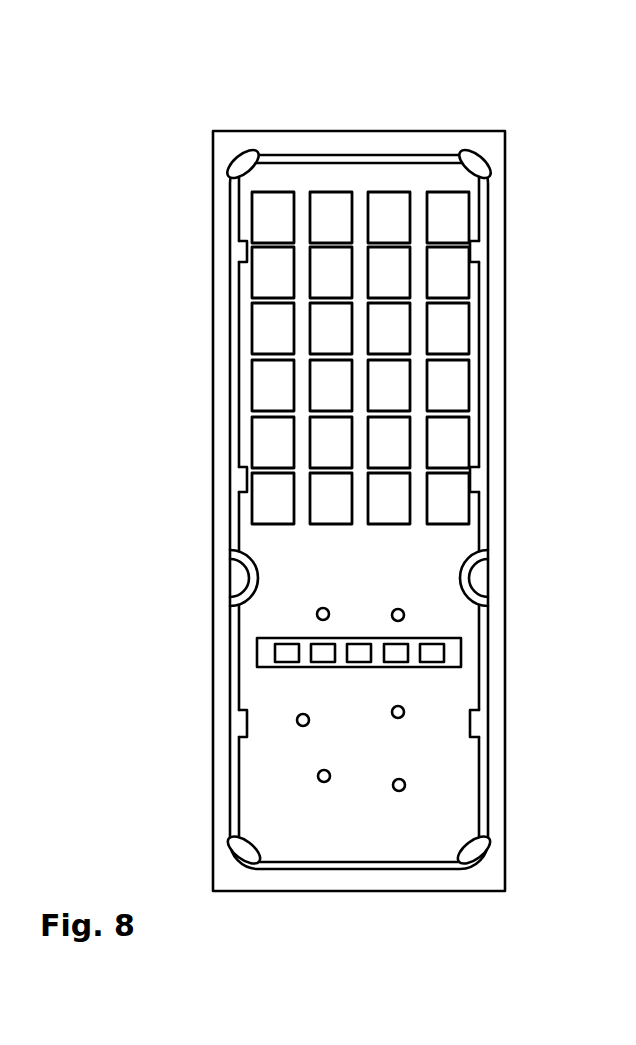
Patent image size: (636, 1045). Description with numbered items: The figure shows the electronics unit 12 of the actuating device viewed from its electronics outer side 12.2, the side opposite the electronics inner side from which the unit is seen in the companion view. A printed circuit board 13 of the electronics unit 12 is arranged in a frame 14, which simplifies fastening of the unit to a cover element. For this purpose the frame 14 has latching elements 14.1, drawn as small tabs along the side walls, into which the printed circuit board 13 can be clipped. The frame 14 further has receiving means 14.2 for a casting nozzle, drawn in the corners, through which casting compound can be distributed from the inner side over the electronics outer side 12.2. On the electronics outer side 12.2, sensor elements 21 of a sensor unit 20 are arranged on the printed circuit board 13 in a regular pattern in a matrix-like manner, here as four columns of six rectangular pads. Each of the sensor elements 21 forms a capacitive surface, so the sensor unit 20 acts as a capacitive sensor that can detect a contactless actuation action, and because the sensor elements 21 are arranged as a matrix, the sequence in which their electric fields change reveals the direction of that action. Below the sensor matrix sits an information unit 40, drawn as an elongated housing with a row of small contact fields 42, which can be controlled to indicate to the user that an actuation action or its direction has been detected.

The electronics unit 12 is at (141, 109).
The electronics outer side 12.2 is at (359, 512).
The printed circuit board 13 is at (475, 517).
The frame 14 is at (497, 443).
The latching elements 14.1 is at (480, 247).
The receiving means for a casting nozzle 14.2 is at (480, 154).
The sensor unit 20 is at (495, 212).
The sensor elements 21 is at (336, 200).
The information unit 40 is at (481, 650).
The contact elements 42 is at (423, 655).